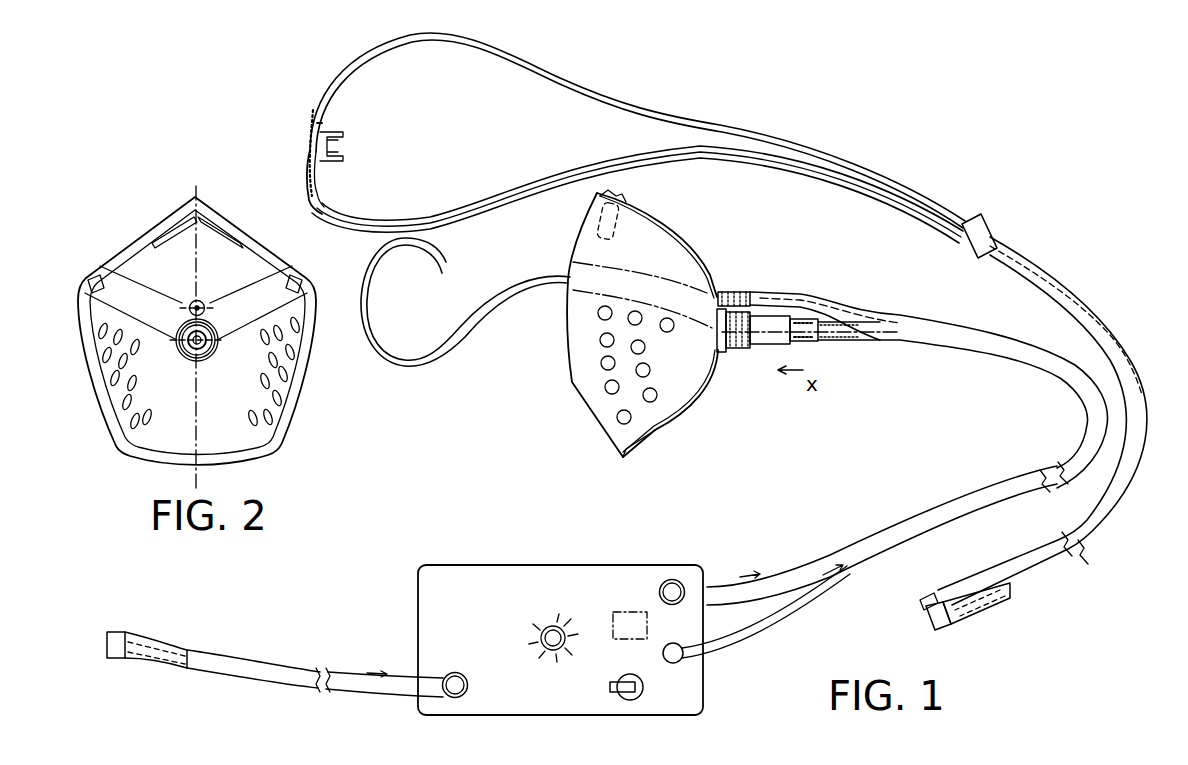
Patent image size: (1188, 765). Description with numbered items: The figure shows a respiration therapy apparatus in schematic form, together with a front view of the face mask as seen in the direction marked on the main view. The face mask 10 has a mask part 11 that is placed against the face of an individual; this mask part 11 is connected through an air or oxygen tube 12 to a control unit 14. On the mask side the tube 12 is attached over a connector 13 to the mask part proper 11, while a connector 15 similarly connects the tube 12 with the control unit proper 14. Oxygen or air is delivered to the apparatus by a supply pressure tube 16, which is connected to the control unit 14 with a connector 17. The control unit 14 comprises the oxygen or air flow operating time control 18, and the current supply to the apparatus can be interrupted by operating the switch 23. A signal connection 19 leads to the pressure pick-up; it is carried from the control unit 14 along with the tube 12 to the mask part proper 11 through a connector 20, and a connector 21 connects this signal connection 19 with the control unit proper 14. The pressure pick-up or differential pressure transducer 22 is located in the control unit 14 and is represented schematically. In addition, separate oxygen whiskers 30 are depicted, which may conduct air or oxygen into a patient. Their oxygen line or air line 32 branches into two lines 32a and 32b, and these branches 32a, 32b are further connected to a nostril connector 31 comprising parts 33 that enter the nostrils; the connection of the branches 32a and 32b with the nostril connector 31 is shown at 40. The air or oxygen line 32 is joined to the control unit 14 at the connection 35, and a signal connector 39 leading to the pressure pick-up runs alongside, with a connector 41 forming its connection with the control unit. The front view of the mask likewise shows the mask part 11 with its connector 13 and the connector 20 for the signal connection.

In FIG. 1, the face mask 10 is at (552, 321).
In FIG. 2, the mask part 11 is at (146, 251).
In FIG. 1, the mask part 11 is at (665, 238).
In FIG. 1, the air or oxygen tube 12 is at (992, 352).
In FIG. 2, the connector 13 is at (191, 356).
In FIG. 1, the connector 13 is at (737, 350).
In FIG. 1, the control unit 14 is at (634, 624).
In FIG. 1, the connector 15 is at (671, 567).
In FIG. 1, the supply pressure tube 16 is at (282, 672).
In FIG. 1, the connector 17 is at (464, 676).
In FIG. 1, the oxygen or air flow operating time control 18 is at (547, 628).
In FIG. 1, the signal connection 19 is at (800, 598).
In FIG. 2, the connector 20 is at (203, 304).
In FIG. 1, the connector 20 is at (728, 290).
In FIG. 1, the connector 21 is at (681, 660).
In FIG. 1, the pressure pick-up 22 is at (630, 622).
In FIG. 1, the switch 23 is at (630, 700).
In FIG. 1, the oxygen whiskers 30 is at (629, 145).
In FIG. 1, the nostril connector 31 is at (322, 123).
In FIG. 1, the oxygen line or air line 32 is at (1146, 412).
In FIG. 1, the branch line 32a is at (566, 82).
In FIG. 1, the branch line 32b is at (505, 188).
In FIG. 1, the nostril-entering parts 33 is at (342, 156).
In FIG. 1, the connection 35 is at (962, 608).
In FIG. 1, the signal connector 39 is at (1107, 493).
In FIG. 1, the connection 40 is at (312, 190).
In FIG. 1, the connector 41 is at (934, 594).